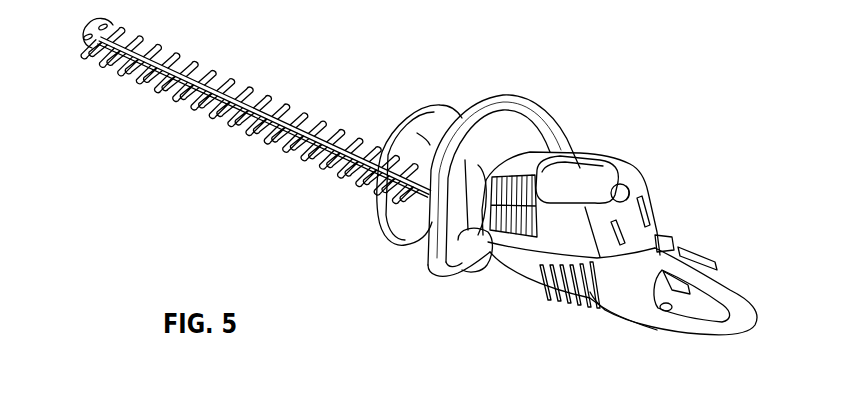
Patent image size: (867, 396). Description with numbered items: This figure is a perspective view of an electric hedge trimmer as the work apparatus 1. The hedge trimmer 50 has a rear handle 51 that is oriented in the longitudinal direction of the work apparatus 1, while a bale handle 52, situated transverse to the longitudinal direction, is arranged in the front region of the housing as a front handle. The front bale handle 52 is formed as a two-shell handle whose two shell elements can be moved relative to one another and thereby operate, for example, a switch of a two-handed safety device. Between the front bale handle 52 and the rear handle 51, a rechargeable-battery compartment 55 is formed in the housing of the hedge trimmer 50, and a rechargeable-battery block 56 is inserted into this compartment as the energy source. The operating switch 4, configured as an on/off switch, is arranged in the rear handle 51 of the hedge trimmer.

The work apparatus 1 is at (602, 114).
The operating switch 4 is at (677, 283).
The hedge trimmer 50 is at (493, 265).
The rear handle 51 is at (723, 277).
The bale handle 52 is at (502, 93).
The rechargeable-battery compartment 55 is at (630, 165).
The rechargeable-battery block 56 is at (603, 167).